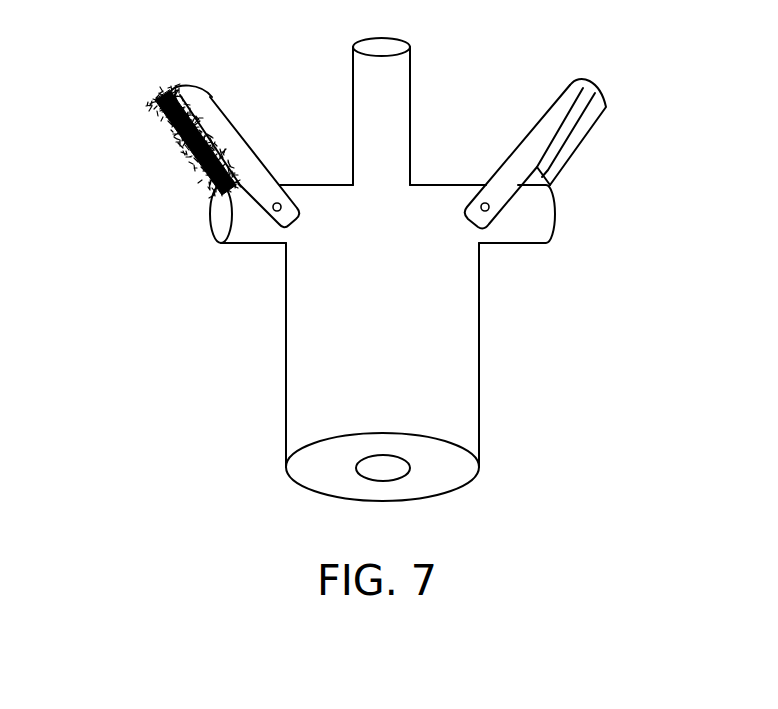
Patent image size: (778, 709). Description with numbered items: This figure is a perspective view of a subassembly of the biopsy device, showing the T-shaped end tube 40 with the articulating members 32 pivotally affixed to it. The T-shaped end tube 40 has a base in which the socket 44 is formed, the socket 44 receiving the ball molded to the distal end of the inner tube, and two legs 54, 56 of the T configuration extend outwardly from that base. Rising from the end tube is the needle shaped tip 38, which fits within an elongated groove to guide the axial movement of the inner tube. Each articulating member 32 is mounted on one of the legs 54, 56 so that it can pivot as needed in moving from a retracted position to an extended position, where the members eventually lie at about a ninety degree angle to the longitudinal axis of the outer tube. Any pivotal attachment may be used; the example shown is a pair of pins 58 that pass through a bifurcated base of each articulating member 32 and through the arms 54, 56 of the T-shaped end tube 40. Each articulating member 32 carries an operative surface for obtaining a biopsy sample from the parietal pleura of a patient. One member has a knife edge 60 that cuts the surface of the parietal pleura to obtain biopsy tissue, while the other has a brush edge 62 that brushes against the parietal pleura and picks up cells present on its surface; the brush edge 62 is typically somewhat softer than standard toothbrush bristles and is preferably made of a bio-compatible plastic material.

The articulating member 32 is at (209, 96).
The needle shaped tip 38 is at (374, 49).
The T-shaped end tube 40 is at (370, 333).
The socket 44 is at (380, 467).
The leg 54 is at (227, 243).
The leg 56 is at (548, 228).
The pin 58 is at (273, 208).
The knife edge 60 is at (571, 157).
The brush edge 62 is at (163, 128).